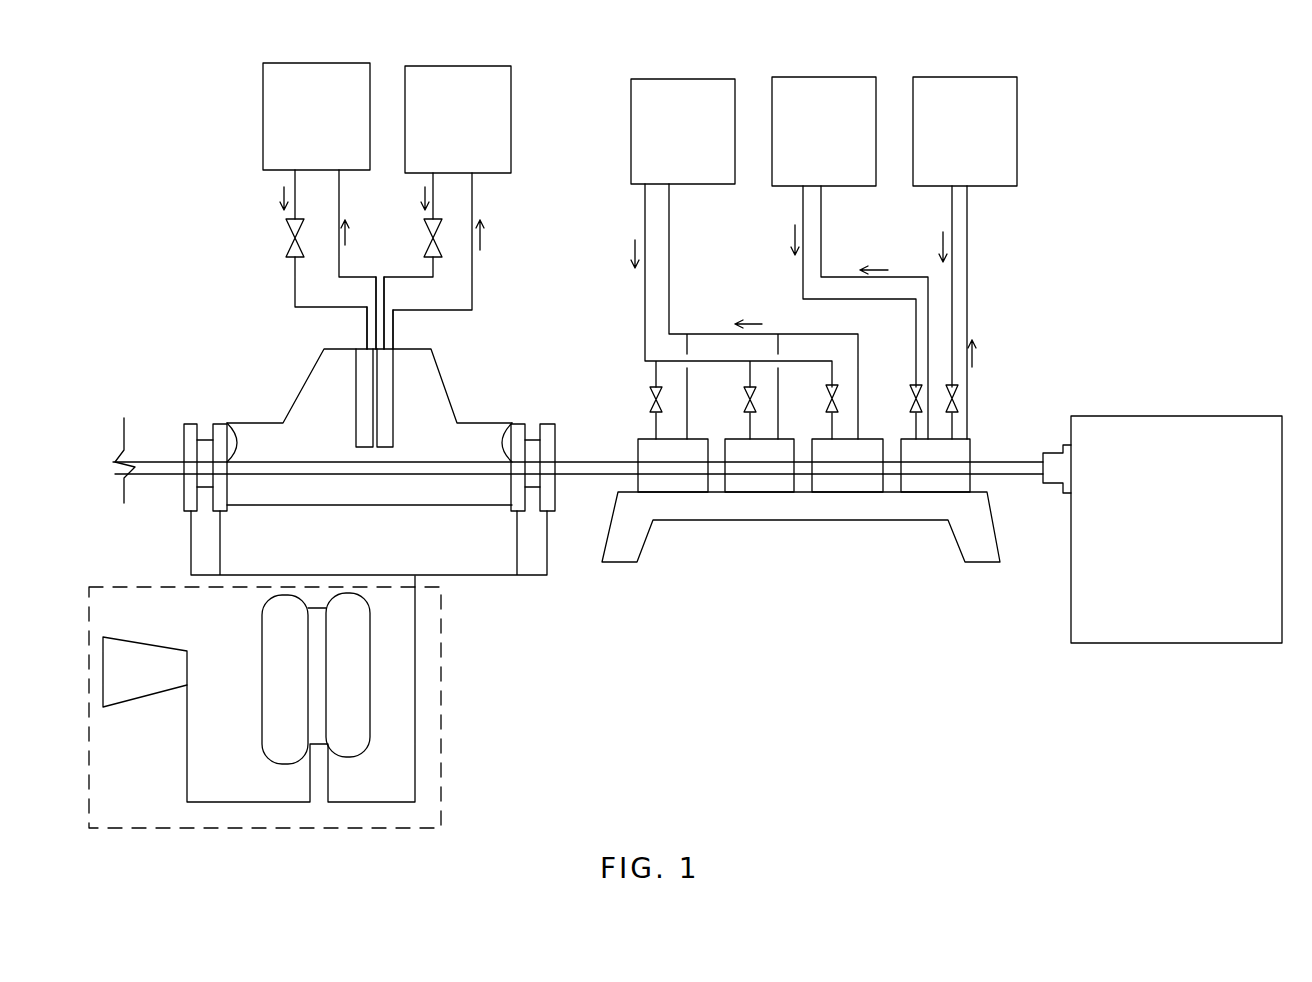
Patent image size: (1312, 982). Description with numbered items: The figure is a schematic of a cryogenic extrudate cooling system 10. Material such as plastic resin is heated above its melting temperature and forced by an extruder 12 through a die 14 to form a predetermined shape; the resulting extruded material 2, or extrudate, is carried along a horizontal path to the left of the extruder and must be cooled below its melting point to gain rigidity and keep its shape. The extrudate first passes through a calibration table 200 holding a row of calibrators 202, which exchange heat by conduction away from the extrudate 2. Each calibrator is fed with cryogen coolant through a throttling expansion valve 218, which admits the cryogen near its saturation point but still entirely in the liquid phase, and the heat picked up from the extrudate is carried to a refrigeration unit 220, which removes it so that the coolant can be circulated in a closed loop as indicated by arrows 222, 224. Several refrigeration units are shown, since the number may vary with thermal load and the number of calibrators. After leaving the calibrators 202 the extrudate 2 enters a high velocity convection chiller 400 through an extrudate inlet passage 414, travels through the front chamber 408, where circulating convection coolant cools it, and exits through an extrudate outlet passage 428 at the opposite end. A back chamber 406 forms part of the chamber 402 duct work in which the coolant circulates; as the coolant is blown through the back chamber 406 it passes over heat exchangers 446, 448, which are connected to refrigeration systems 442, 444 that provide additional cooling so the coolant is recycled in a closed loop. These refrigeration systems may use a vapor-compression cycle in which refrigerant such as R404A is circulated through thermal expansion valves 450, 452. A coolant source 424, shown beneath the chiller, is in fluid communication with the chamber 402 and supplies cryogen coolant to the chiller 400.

The cryogenic extrudate cooling system 10 is at (1156, 94).
The extruder 12 is at (1180, 503).
The die 14 is at (1053, 443).
The extruded material 2 is at (1002, 454).
The calibration table 200 is at (839, 48).
The calibrators 202 is at (640, 482).
The throttling expansion valve 218 is at (648, 400).
The refrigeration unit 220 is at (706, 145).
The arrows 222 is at (768, 311).
The arrows 224 is at (842, 311).
The high velocity convection chiller 400 is at (388, 47).
The chamber 402 is at (480, 435).
The back chamber 406 is at (435, 381).
The front chamber 408 is at (349, 505).
The extrudate inlet passage 414 is at (515, 423).
The coolant source 424 is at (441, 712).
The extrudate outlet passage 428 is at (228, 423).
The refrigeration system 442 is at (480, 126).
The refrigeration system 444 is at (338, 124).
The heat exchanger 446 is at (393, 407).
The heat exchanger 448 is at (356, 406).
The thermal expansion valve 450 is at (430, 248).
The thermal expansion valve 452 is at (290, 246).